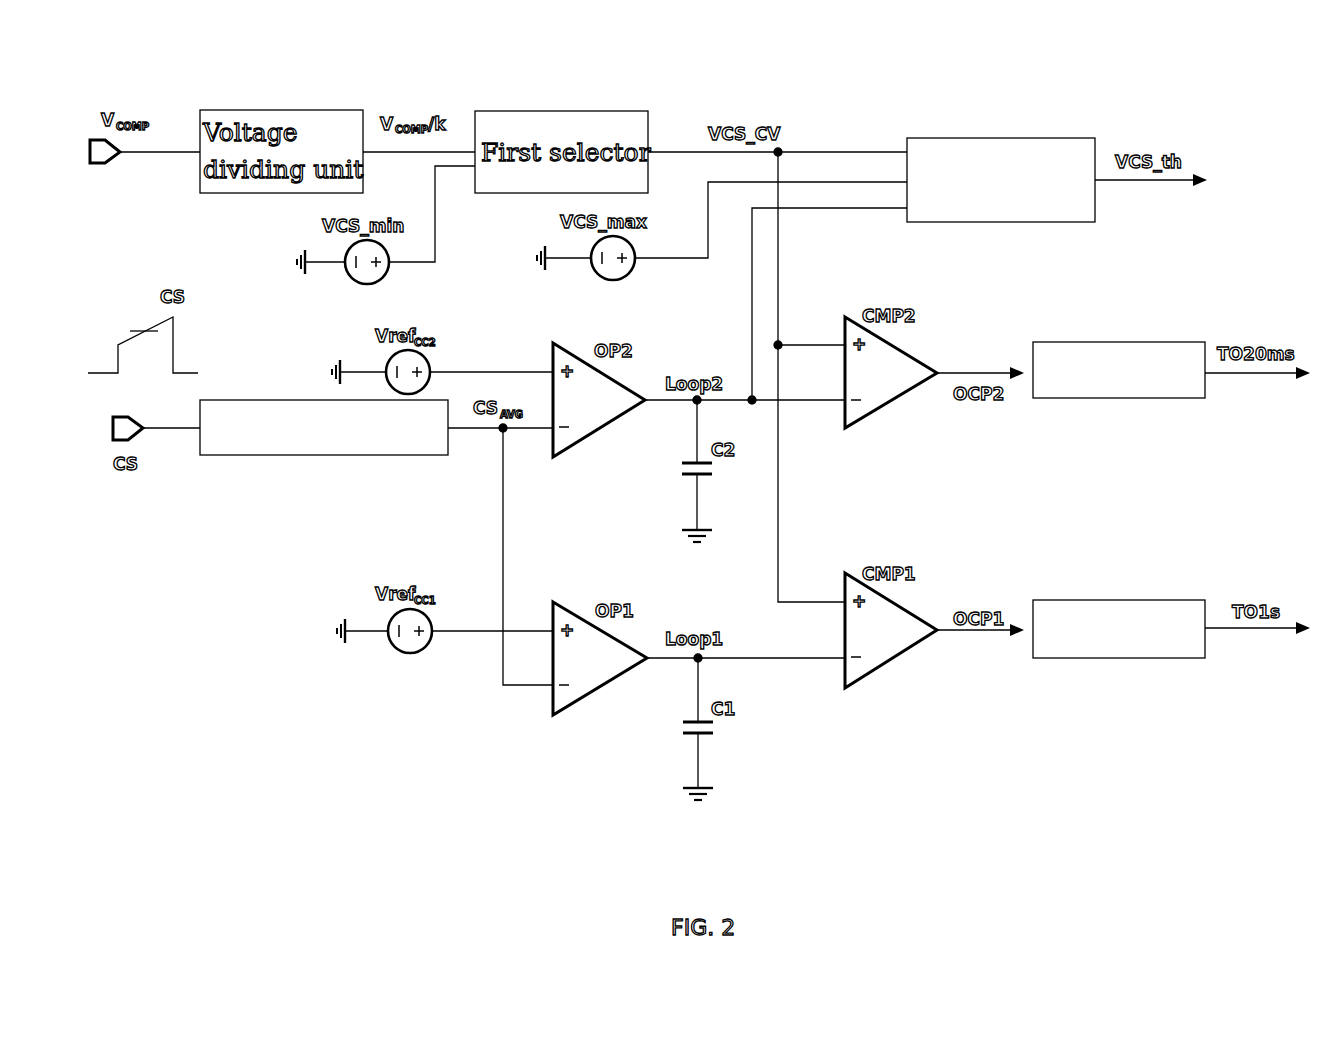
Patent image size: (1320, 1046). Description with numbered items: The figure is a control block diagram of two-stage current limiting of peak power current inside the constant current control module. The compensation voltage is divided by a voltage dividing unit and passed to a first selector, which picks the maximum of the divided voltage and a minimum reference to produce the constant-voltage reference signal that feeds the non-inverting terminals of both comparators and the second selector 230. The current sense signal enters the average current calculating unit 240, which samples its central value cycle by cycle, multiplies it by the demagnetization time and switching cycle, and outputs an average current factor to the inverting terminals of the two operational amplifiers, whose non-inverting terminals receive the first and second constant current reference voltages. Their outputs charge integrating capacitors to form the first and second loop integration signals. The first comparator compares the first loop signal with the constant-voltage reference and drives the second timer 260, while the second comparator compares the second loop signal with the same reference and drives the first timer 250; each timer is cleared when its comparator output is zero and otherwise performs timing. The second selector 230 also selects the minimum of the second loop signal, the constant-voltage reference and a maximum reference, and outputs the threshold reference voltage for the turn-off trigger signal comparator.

The second selector 230 is at (950, 138).
The average current calculating unit 240 is at (282, 400).
The first timer 250 is at (1103, 342).
The second timer 260 is at (1098, 600).